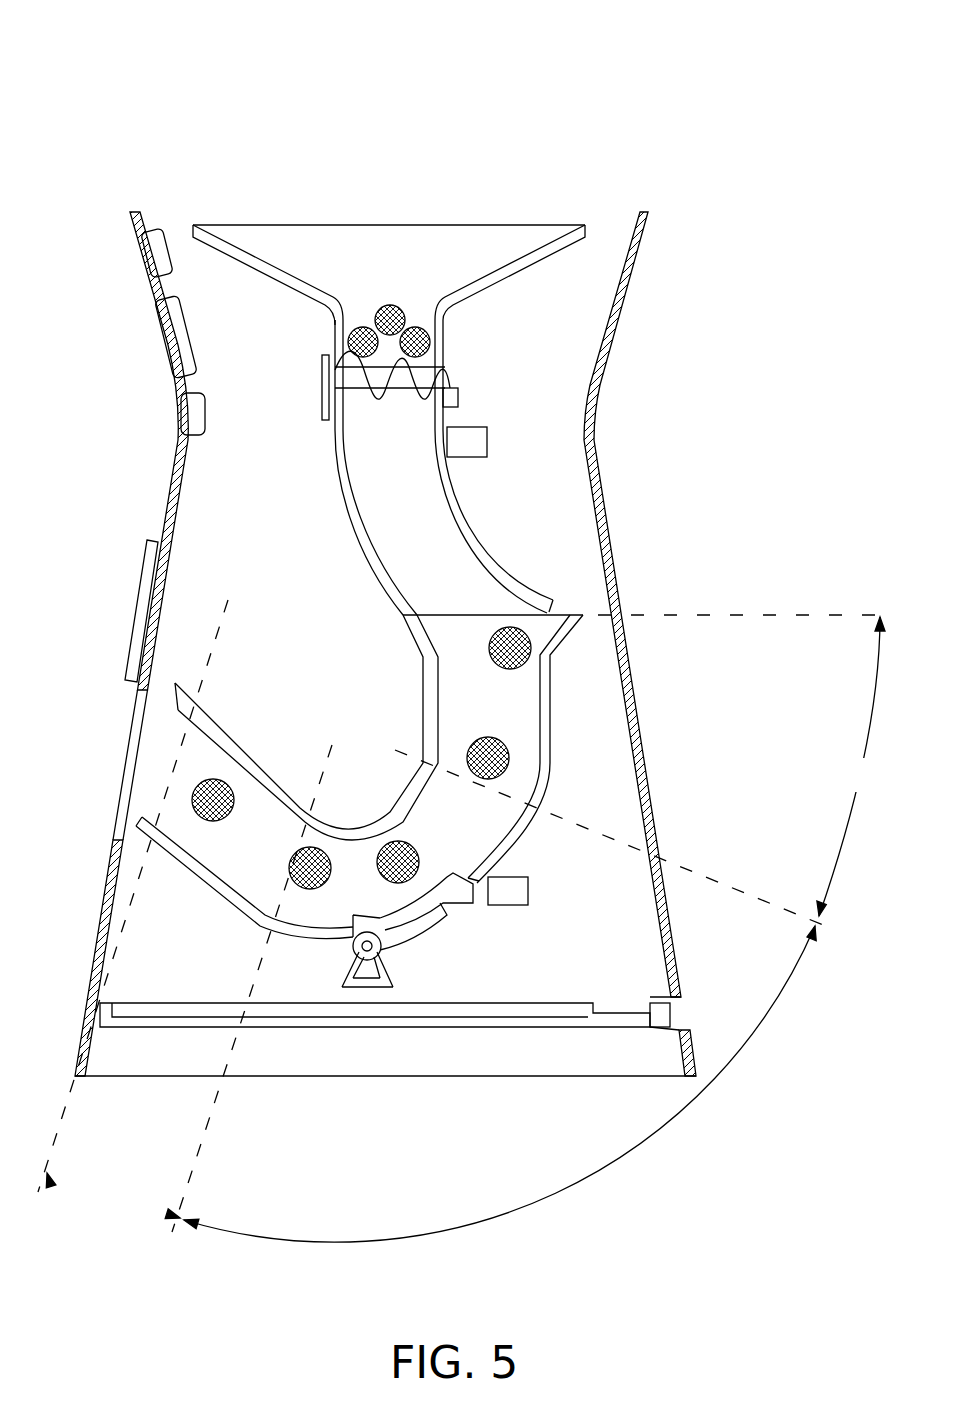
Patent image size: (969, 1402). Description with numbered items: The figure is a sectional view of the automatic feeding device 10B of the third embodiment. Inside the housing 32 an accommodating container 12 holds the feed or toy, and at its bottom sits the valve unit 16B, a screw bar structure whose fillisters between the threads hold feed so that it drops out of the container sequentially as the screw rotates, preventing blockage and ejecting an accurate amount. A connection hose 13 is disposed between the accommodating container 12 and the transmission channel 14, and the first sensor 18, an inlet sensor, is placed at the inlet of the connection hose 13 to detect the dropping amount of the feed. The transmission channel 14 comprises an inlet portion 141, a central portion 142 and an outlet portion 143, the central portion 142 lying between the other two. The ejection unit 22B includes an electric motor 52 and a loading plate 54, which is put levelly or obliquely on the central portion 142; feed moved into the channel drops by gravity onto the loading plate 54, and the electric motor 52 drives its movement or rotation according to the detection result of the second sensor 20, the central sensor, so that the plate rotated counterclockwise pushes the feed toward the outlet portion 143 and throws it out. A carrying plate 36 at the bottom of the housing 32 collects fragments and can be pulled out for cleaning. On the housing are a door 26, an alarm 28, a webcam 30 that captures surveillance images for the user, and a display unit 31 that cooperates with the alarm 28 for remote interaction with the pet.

The automatic feeding device 10B is at (781, 66).
The accommodating container 12 is at (530, 224).
The connection hose 13 is at (455, 557).
The transmission channel 14 is at (545, 718).
The valve unit 16B is at (445, 383).
The first sensor 18 is at (475, 443).
The second sensor 20 is at (522, 893).
The ejection unit 22B is at (423, 962).
The door 26 is at (147, 567).
The alarm 28 is at (142, 257).
The webcam 30 is at (190, 412).
The display unit 31 is at (175, 338).
The housing 32 is at (640, 240).
The carrying plate 36 is at (560, 1008).
The electric motor 52 is at (358, 962).
The loading plate 54 is at (448, 922).
The inlet portion 141 is at (640, 771).
The central portion 142 is at (582, 1181).
The outlet portion 143 is at (167, 1214).